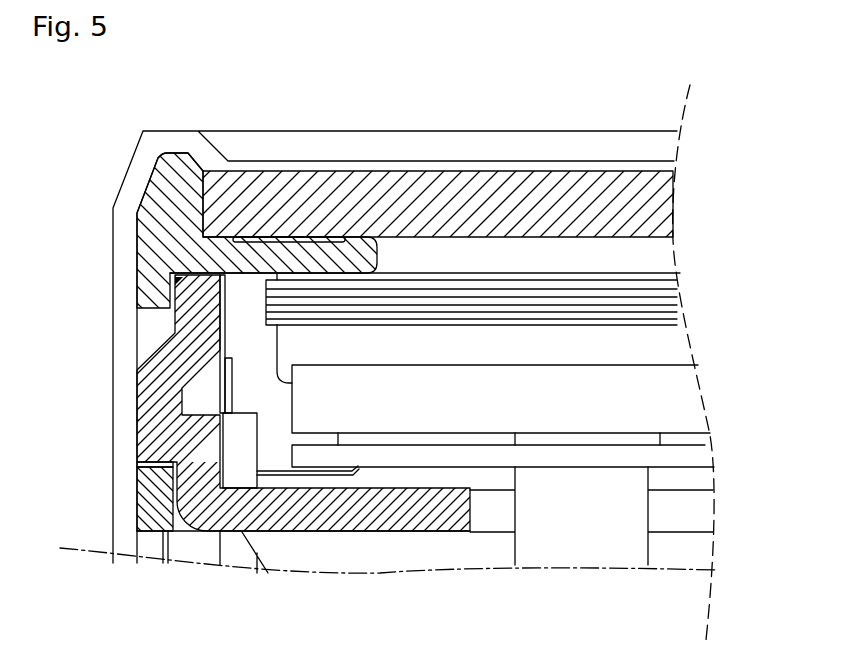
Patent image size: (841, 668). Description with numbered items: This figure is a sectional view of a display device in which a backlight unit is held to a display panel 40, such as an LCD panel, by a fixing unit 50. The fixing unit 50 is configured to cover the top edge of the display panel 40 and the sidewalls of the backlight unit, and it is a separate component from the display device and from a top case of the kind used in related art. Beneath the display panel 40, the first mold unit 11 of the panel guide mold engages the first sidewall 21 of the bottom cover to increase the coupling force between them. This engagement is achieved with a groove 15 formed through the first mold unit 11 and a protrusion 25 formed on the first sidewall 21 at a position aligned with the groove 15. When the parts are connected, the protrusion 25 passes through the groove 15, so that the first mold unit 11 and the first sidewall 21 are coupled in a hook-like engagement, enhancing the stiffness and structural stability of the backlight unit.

The fixing unit 50 is at (143, 162).
The first mold unit 11 is at (153, 247).
The display panel 40 is at (530, 180).
The groove 15 is at (142, 341).
The protrusion 25 is at (150, 423).
The first sidewall 21 is at (163, 513).